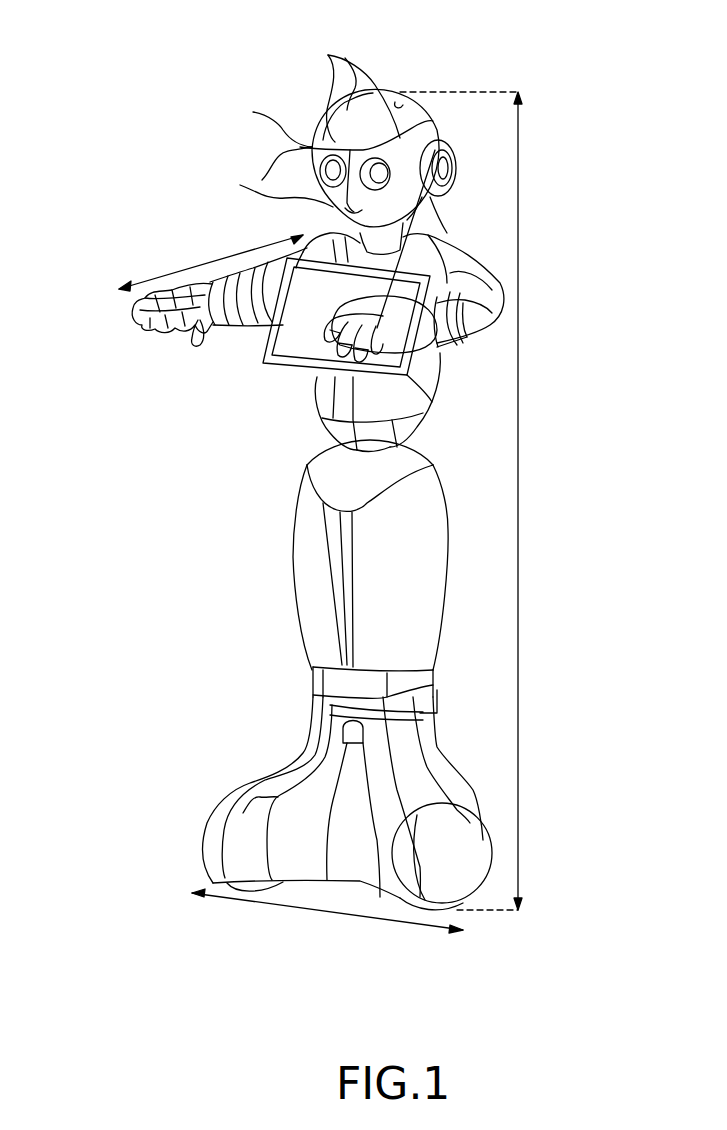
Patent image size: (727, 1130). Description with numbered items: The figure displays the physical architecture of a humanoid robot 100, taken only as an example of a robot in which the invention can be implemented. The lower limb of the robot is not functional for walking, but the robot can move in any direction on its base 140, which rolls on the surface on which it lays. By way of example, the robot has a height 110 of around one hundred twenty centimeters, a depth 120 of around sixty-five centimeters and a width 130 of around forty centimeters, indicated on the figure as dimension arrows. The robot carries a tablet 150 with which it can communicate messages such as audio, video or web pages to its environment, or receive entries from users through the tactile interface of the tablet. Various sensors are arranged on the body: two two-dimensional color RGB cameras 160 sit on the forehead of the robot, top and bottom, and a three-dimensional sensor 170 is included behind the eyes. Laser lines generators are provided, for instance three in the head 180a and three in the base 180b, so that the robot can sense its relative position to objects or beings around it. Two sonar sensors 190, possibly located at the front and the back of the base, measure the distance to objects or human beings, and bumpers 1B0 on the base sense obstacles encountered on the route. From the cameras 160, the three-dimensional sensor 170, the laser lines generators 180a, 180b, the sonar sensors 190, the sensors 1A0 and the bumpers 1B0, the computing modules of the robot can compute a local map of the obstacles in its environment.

The robot 100 is at (210, 563).
The height 110 is at (533, 447).
The depth 120 is at (196, 264).
The width 130 is at (307, 908).
The base 140 is at (163, 833).
The tablet 150 is at (265, 364).
The 2D color RGB cameras 160 is at (347, 210).
The 3D sensor 170 is at (322, 141).
The laser lines generators in the head 180a is at (340, 55).
The laser lines generators in the base 180b is at (357, 732).
The sonar sensors 190 is at (337, 780).
The sensors 1A0 is at (428, 143).
The bumpers 1B0 is at (397, 850).